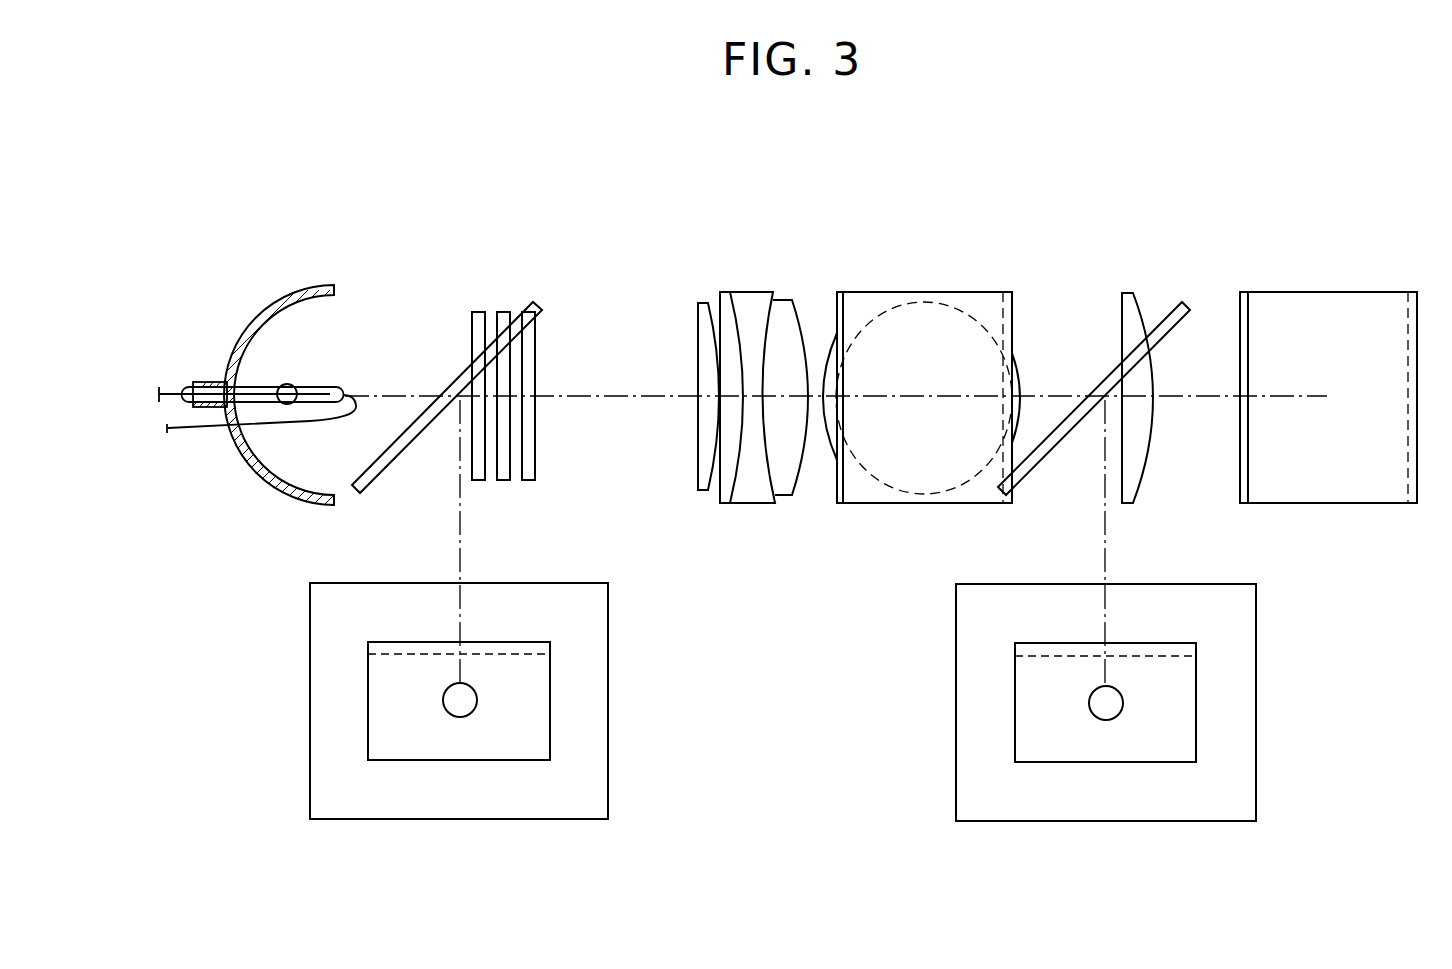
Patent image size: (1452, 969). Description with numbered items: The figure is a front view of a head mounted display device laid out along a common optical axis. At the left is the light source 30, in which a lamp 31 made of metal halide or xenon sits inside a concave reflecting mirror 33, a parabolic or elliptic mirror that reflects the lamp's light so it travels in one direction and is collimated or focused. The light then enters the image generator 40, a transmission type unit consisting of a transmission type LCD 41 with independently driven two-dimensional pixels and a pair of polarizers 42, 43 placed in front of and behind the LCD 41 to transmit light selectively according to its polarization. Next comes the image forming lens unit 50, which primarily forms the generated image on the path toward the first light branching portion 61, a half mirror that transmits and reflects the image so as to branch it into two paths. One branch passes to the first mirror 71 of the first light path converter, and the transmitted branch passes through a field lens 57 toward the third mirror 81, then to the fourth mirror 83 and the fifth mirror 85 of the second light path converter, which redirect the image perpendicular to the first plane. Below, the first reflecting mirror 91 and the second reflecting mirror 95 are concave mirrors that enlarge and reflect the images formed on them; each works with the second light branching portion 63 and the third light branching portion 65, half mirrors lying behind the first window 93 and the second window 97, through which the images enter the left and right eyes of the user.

The light source 30 is at (233, 278).
The lamp 31 is at (293, 382).
The concave reflecting mirror 33 is at (313, 283).
The image generator 40 is at (540, 229).
The transmission type LCD 41 is at (503, 311).
The polarizer 42 is at (474, 311).
The polarizer 43 is at (537, 348).
The image forming lens unit 50 is at (792, 291).
The field lens 57 is at (1121, 312).
The first light branching portion 61 is at (1010, 292).
The second light branching portion 63 is at (459, 701).
The third light branching portion 65 is at (1105, 702).
The first mirror 71 is at (838, 292).
The third mirror 81 is at (1413, 292).
The fourth mirror 83 is at (1240, 292).
The fifth mirror 85 is at (1166, 306).
The first reflecting mirror 91 is at (608, 762).
The first window 93 is at (550, 681).
The second reflecting mirror 95 is at (1256, 763).
The second window 97 is at (1196, 683).